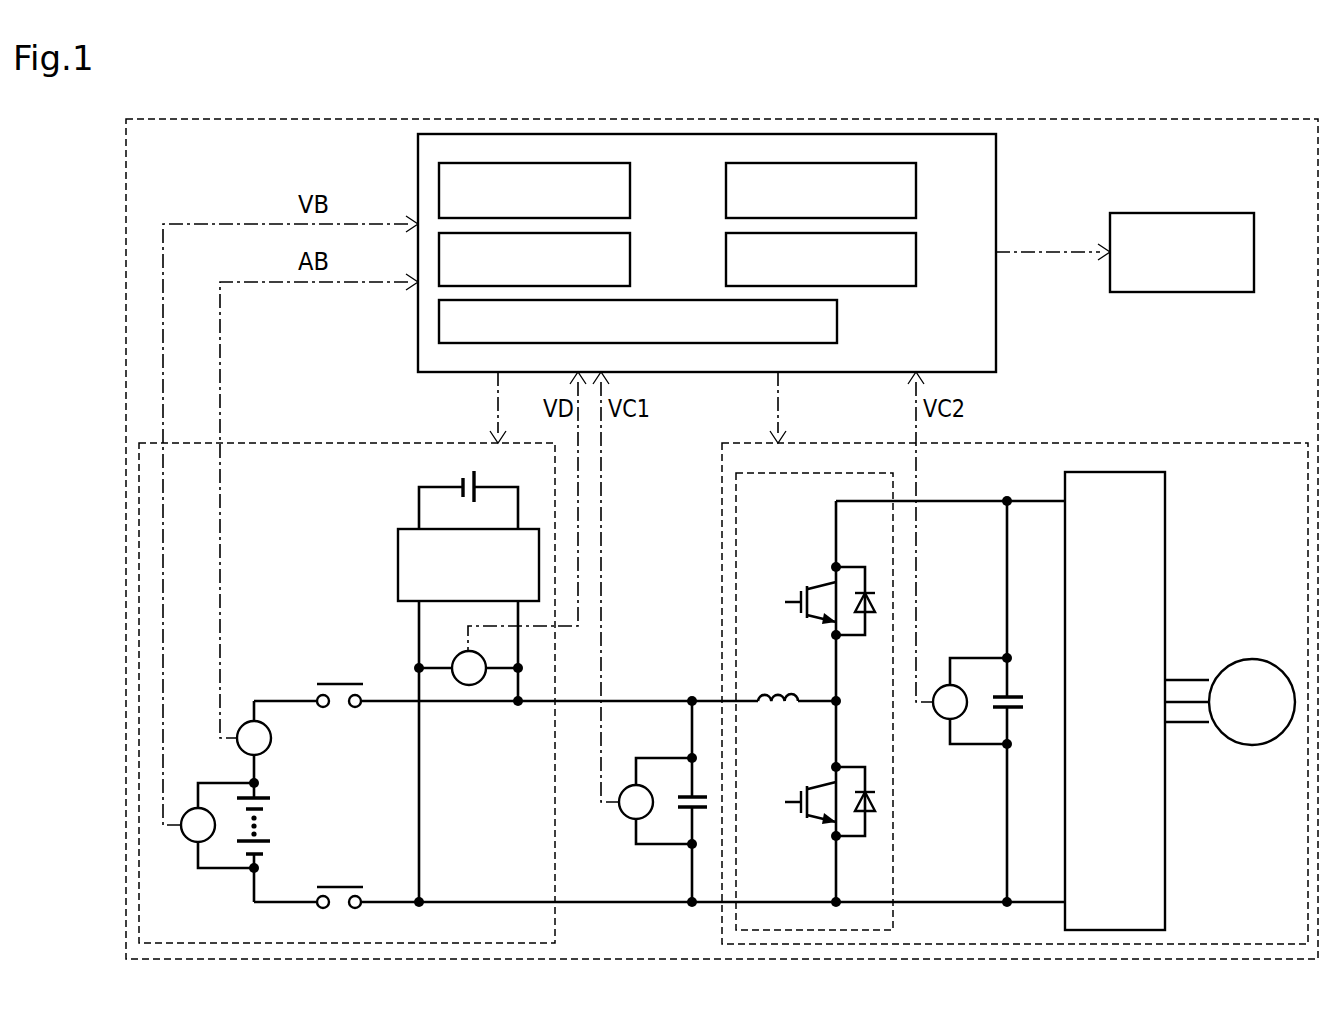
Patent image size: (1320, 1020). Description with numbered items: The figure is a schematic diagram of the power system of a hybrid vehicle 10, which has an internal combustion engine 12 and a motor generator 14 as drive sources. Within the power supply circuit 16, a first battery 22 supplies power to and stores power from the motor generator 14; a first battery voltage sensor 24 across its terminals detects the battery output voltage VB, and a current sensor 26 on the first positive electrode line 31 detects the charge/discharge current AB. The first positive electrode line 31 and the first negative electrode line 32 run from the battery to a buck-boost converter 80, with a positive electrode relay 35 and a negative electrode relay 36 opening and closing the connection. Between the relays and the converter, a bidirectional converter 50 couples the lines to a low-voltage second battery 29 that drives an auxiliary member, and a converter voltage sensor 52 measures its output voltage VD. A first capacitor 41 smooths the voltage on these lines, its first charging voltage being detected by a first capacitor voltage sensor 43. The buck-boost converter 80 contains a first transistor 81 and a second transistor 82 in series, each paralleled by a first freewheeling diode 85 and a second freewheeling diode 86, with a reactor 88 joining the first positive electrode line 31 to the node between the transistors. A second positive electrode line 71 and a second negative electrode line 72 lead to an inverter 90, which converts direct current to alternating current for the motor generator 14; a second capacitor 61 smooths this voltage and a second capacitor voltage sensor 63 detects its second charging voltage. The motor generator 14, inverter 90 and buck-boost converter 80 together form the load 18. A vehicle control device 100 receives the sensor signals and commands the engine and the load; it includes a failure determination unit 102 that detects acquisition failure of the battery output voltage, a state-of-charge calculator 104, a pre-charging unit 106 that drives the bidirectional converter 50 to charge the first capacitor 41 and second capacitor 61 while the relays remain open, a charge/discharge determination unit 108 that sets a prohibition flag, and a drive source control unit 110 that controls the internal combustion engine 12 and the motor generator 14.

The hybrid vehicle 10 is at (1122, 119).
The internal combustion engine 12 is at (1183, 213).
The motor generator 14 is at (1248, 659).
The power supply circuit 16 is at (300, 443).
The electric load 18 is at (1202, 443).
The first battery 22 is at (271, 797).
The first battery voltage sensor 24 is at (188, 840).
The current sensor 26 is at (271, 740).
The second battery 29 is at (476, 482).
The first positive electrode line 31 is at (272, 701).
The first negative electrode line 32 is at (280, 902).
The positive electrode relay 35 is at (340, 684).
The negative electrode relay 36 is at (343, 887).
The first capacitor 41 is at (683, 810).
The first capacitor voltage sensor 43 is at (618, 815).
The bidirectional converter 50 is at (398, 565).
The converter voltage sensor 52 is at (470, 686).
The second capacitor 61 is at (1015, 697).
The second capacitor voltage sensor 63 is at (935, 715).
The second positive electrode line 71 is at (955, 505).
The second negative electrode line 72 is at (928, 902).
The buck-boost converter 80 is at (893, 917).
The first transistor 81 is at (822, 585).
The second transistor 82 is at (822, 785).
The first freewheeling diode 85 is at (853, 637).
The second freewheeling diode 86 is at (853, 838).
The reactor 88 is at (777, 690).
The inverter 90 is at (1165, 515).
The vehicle control device 100 is at (996, 152).
The failure determination unit 102 is at (630, 190).
The state-of-charge calculator 104 is at (630, 258).
The pre-charging unit 106 is at (837, 320).
The charge/discharge determination unit 108 is at (916, 190).
The drive source control unit 110 is at (916, 258).